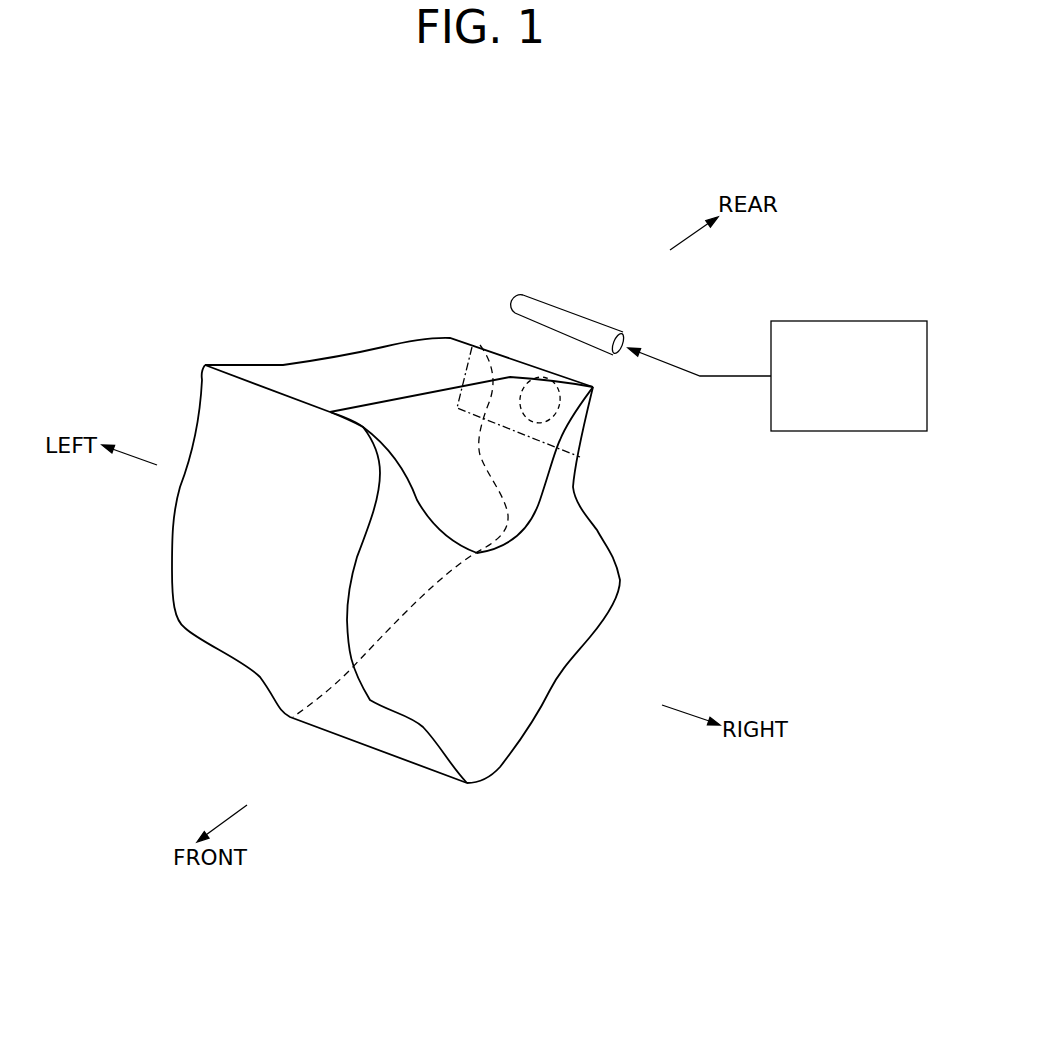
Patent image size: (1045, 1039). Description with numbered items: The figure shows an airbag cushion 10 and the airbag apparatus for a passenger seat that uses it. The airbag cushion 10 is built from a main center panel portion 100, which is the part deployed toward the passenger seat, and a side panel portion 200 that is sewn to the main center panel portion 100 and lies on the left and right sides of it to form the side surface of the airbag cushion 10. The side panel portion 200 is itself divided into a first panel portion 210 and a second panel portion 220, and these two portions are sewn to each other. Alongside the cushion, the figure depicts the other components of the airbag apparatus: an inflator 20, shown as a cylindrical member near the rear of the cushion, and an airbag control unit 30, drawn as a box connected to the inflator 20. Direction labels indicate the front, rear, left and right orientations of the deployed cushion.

The airbag cushion 10 is at (405, 333).
The inflator 20 is at (570, 323).
The airbag control unit 30 is at (848, 321).
The main center panel portion 100 is at (190, 592).
The side panel portion 200 is at (308, 362).
The first panel portion 210 is at (522, 483).
The second panel portion 220 is at (582, 613).